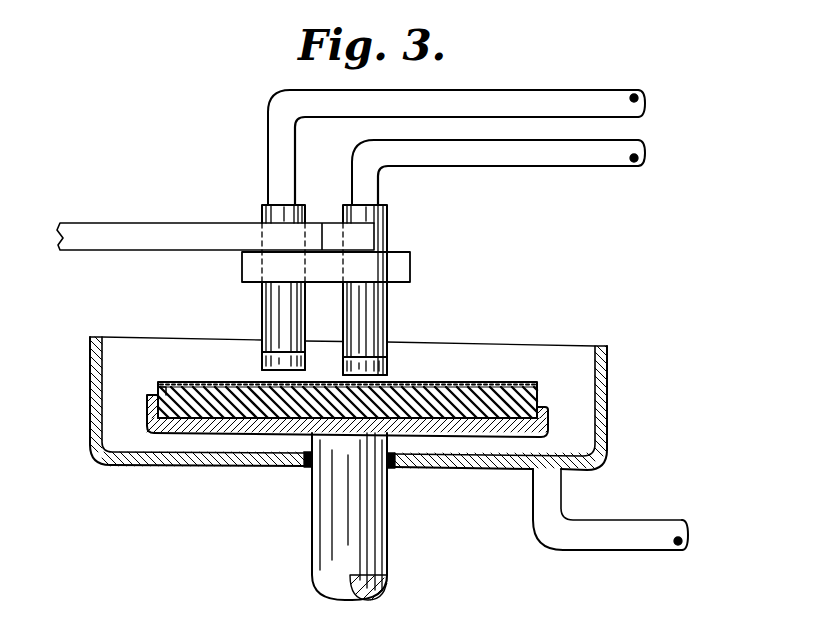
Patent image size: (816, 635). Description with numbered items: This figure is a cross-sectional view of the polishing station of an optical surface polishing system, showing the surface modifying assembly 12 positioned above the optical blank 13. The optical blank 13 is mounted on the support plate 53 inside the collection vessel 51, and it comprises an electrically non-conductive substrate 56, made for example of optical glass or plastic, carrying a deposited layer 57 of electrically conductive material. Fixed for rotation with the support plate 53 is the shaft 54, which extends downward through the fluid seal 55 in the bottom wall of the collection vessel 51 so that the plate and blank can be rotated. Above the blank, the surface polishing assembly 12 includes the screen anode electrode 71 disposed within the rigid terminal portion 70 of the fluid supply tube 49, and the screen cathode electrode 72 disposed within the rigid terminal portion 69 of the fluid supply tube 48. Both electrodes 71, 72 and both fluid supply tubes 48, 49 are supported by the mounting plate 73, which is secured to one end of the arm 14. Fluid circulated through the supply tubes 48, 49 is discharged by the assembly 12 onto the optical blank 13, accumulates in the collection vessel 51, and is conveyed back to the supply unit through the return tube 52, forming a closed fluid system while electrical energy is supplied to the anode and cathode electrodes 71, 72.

The surface modifying assembly 12 is at (254, 219).
The optical blank 13 is at (477, 381).
The arm 14 is at (144, 230).
The fluid supply tube 48 is at (546, 100).
The fluid supply tube 49 is at (566, 153).
The collection vessel 51 is at (610, 380).
The return tube 52 is at (631, 528).
The support plate 53 is at (150, 410).
The shaft 54 is at (368, 520).
The fluid seal 55 is at (300, 467).
The electrically non-conductive substrate 56 is at (166, 393).
The deposited layer 57 is at (192, 386).
The rigid terminal portion 69 is at (262, 208).
The rigid terminal portion 70 is at (346, 208).
The screen anode electrode 71 is at (372, 357).
The screen cathode electrode 72 is at (268, 352).
The mounting plate 73 is at (398, 259).